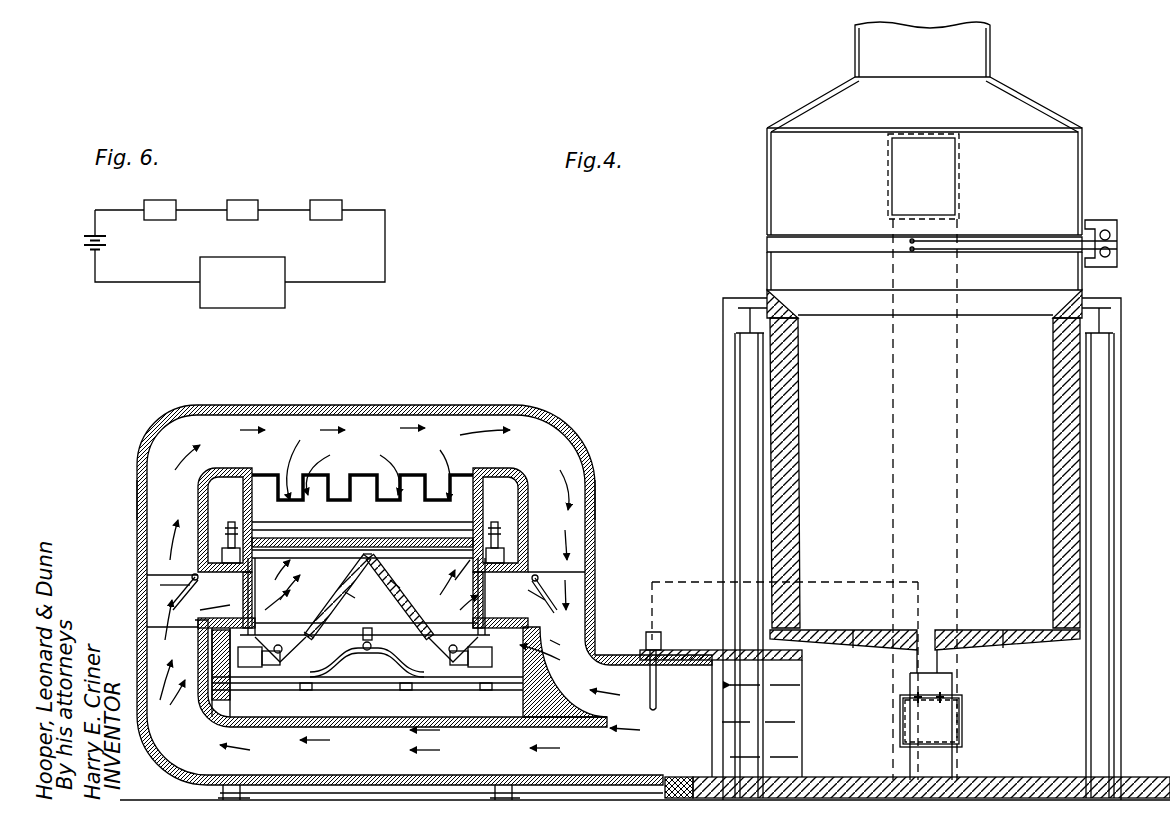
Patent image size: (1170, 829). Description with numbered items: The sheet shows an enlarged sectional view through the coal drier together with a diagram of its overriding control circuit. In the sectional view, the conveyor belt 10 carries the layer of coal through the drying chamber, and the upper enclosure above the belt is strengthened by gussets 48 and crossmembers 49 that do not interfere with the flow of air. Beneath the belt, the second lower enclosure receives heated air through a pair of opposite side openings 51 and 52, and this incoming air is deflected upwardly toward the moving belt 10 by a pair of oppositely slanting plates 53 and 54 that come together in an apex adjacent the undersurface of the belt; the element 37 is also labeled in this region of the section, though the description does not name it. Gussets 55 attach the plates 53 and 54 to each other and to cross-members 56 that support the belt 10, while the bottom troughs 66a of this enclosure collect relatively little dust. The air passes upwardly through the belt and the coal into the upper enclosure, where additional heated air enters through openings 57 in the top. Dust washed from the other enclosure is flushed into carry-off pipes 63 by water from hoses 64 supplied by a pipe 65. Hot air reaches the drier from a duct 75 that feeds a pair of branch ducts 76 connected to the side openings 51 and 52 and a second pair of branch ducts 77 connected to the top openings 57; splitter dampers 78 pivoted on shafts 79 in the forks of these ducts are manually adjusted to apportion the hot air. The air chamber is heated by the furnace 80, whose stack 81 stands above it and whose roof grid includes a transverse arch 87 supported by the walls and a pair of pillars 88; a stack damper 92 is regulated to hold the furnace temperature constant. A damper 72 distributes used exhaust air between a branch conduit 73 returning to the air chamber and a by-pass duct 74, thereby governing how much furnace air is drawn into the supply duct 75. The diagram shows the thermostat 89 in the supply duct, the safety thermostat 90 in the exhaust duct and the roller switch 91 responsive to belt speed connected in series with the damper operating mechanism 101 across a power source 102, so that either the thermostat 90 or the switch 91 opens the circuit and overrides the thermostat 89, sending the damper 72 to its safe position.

In FIG. 4, the belt 10 is at (299, 572).
In FIG. 4, the deflector 37 is at (396, 611).
In FIG. 4, the gussets 48 is at (249, 492).
In FIG. 4, the crossmembers 49 is at (280, 525).
In FIG. 4, the side opening 51 is at (230, 605).
In FIG. 4, the side opening 52 is at (545, 596).
In FIG. 4, the slanting plate 53 is at (352, 596).
In FIG. 4, the slanting plate 54 is at (395, 583).
In FIG. 4, the gussets 55 is at (372, 556).
In FIG. 4, the cross-members 56 is at (466, 556).
In FIG. 4, the openings 57 is at (382, 498).
In FIG. 4, the carry-off pipes 63 is at (210, 678).
In FIG. 4, the hoses 64 is at (392, 660).
In FIG. 4, the pipe 65 is at (312, 632).
In FIG. 4, the bottom troughs 66a is at (283, 667).
In FIG. 4, the damper 72 is at (937, 690).
In FIG. 4, the branch conduit 73 is at (905, 722).
In FIG. 4, the by-pass duct 74 is at (951, 169).
In FIG. 4, the duct 75 is at (688, 700).
In FIG. 4, the branch ducts 76 is at (195, 627).
In FIG. 4, the branch ducts 77 is at (172, 496).
In FIG. 4, the splitter dampers 78 is at (188, 588).
In FIG. 4, the shafts 79 is at (197, 580).
In FIG. 4, the furnace 80 is at (1075, 435).
In FIG. 4, the stack 81 is at (972, 37).
In FIG. 4, the transverse arch 87 is at (866, 632).
In FIG. 4, the pillars 88 is at (940, 715).
In FIG. 6, the thermostat 89 is at (149, 221).
In FIG. 4, the thermostat 89 is at (657, 634).
In FIG. 6, the thermostat 90 is at (319, 221).
In FIG. 6, the roller switch 91 is at (237, 221).
In FIG. 4, the stack damper 92 is at (1003, 240).
In FIG. 6, the damper operating mechanism 101 is at (238, 309).
In FIG. 6, the power source 102 is at (88, 241).